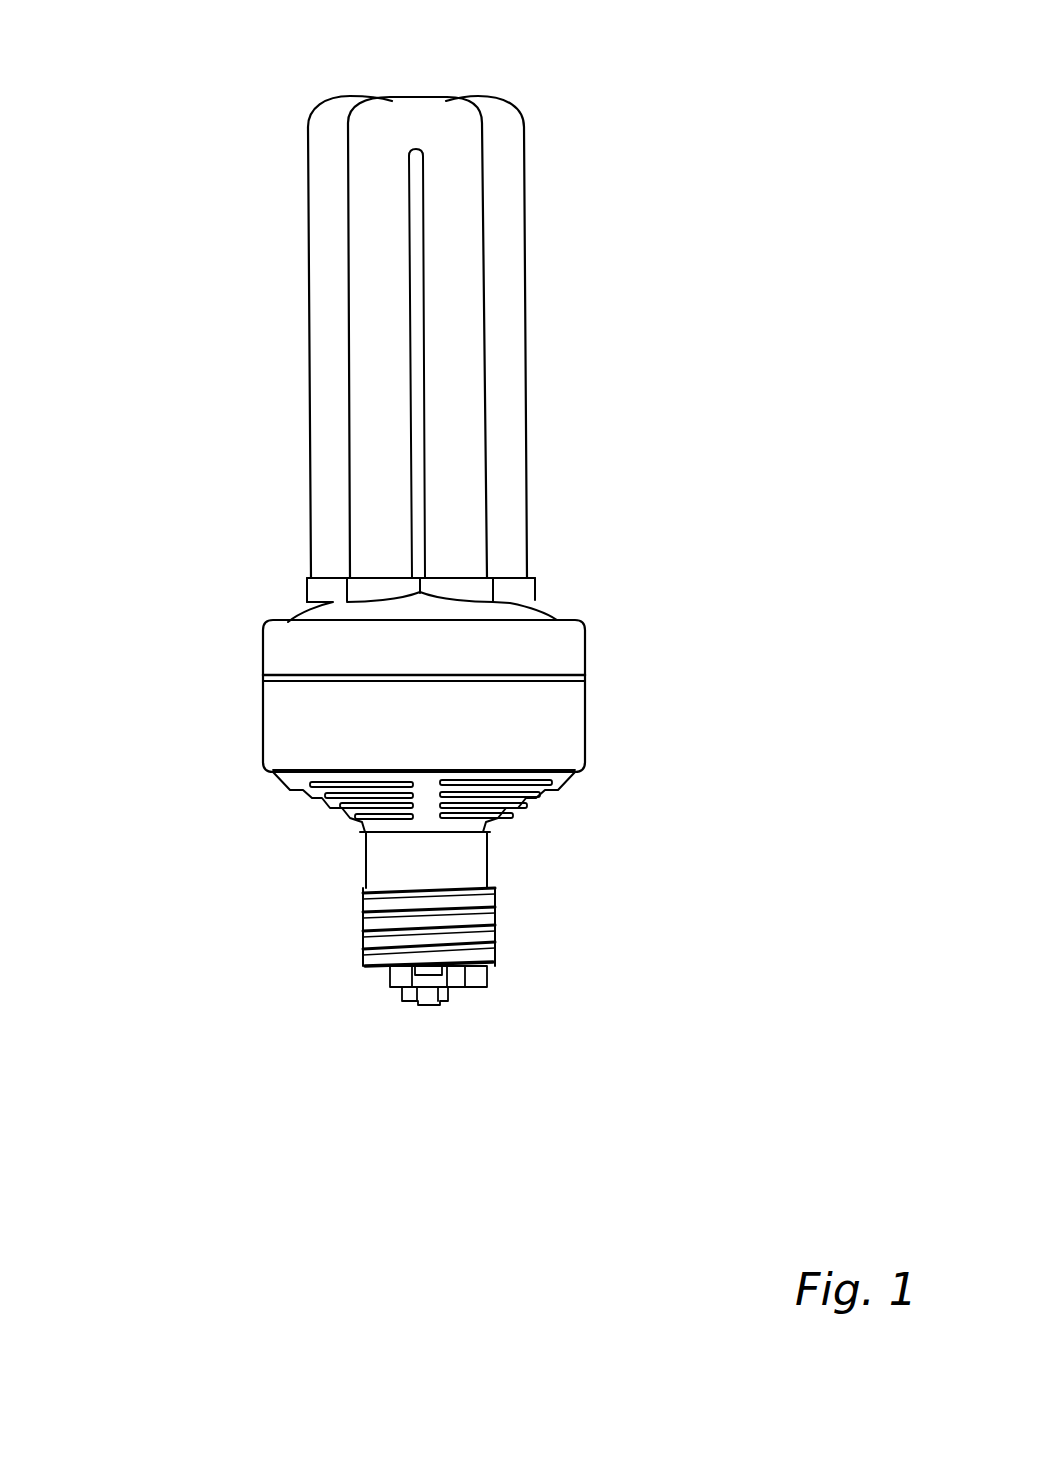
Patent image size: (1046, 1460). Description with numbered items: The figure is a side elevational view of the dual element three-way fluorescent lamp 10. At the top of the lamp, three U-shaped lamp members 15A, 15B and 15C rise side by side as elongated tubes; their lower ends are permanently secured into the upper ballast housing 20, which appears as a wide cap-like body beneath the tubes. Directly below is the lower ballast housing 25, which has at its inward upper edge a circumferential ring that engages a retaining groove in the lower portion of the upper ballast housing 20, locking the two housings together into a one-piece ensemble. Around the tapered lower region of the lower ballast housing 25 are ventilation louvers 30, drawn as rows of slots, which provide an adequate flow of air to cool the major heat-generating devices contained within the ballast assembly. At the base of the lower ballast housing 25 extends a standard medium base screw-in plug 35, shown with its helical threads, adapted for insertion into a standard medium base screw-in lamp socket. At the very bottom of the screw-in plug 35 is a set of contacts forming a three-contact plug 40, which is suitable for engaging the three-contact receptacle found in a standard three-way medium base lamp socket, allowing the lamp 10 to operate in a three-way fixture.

The dual element 3-way fluorescent lamp 10 is at (110, 107).
The U-shaped lamp member 15A is at (422, 97).
The U-shaped lamp member 15B is at (313, 127).
The U-shaped lamp member 15C is at (522, 140).
The upper ballast housing 20 is at (255, 628).
The lower ballast housing 25 is at (256, 729).
The ventilation louvers 30 is at (472, 807).
The medium base screw-in plug 35 is at (358, 930).
The 3-contact plug 40 is at (410, 1007).